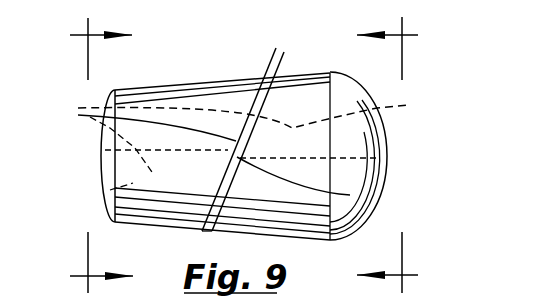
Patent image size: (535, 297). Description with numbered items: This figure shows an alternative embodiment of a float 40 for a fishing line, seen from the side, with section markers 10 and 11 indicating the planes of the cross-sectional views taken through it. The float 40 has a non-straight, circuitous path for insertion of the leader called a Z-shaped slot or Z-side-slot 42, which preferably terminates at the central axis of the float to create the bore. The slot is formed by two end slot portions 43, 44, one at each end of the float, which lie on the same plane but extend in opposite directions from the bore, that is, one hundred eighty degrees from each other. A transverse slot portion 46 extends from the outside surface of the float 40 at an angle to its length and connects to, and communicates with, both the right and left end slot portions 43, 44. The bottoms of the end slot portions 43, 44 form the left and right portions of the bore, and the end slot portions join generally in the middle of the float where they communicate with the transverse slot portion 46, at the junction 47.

The section line 10- 10 is at (449, 50).
The section line 11- 11 is at (70, 50).
The float 40 is at (209, 60).
The Z-side-slot 42 is at (143, 137).
The end slot portion 43 is at (110, 190).
The end slot portion 44 is at (258, 112).
The transverse slot portion 46 is at (247, 130).
The junction of end slot portions 47 is at (350, 195).